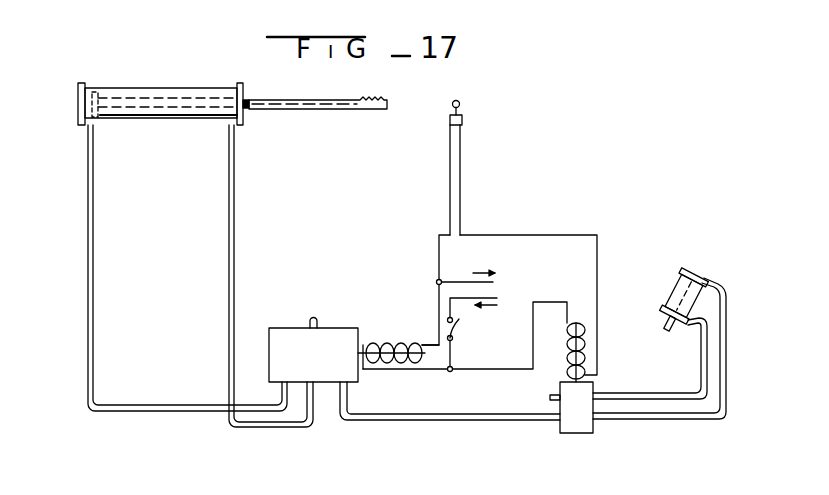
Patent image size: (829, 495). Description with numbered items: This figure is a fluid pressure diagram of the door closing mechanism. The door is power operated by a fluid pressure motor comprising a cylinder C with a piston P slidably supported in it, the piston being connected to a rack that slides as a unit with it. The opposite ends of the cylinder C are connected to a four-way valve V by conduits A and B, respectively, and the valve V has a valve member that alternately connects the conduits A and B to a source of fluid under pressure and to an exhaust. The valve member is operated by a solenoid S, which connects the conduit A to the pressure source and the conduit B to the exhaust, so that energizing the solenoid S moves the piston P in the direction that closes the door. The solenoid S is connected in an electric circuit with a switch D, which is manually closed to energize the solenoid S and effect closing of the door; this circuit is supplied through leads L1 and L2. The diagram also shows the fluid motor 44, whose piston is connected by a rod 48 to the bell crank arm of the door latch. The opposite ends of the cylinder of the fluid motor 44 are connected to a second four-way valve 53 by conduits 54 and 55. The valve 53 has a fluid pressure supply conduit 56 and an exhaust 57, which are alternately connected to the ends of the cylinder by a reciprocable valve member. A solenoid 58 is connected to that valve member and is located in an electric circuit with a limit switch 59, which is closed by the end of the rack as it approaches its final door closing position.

The cylinder C is at (161, 88).
The piston P is at (163, 106).
The conduit B is at (93, 288).
The conduit A is at (235, 268).
The four-way valve V is at (333, 338).
The solenoid S is at (396, 344).
The switch D is at (464, 345).
The lead L1 is at (481, 315).
The lead L2 is at (472, 267).
The limit switch 59 is at (463, 120).
The solenoid 58 is at (568, 361).
The exhaust 57 is at (550, 399).
The four-way valve 53 is at (574, 426).
The fluid pressure supply conduit 56 is at (509, 421).
The conduit 54 is at (702, 418).
The conduit 55 is at (700, 361).
The fluid motor 44 is at (667, 301).
The rod 48 is at (672, 327).